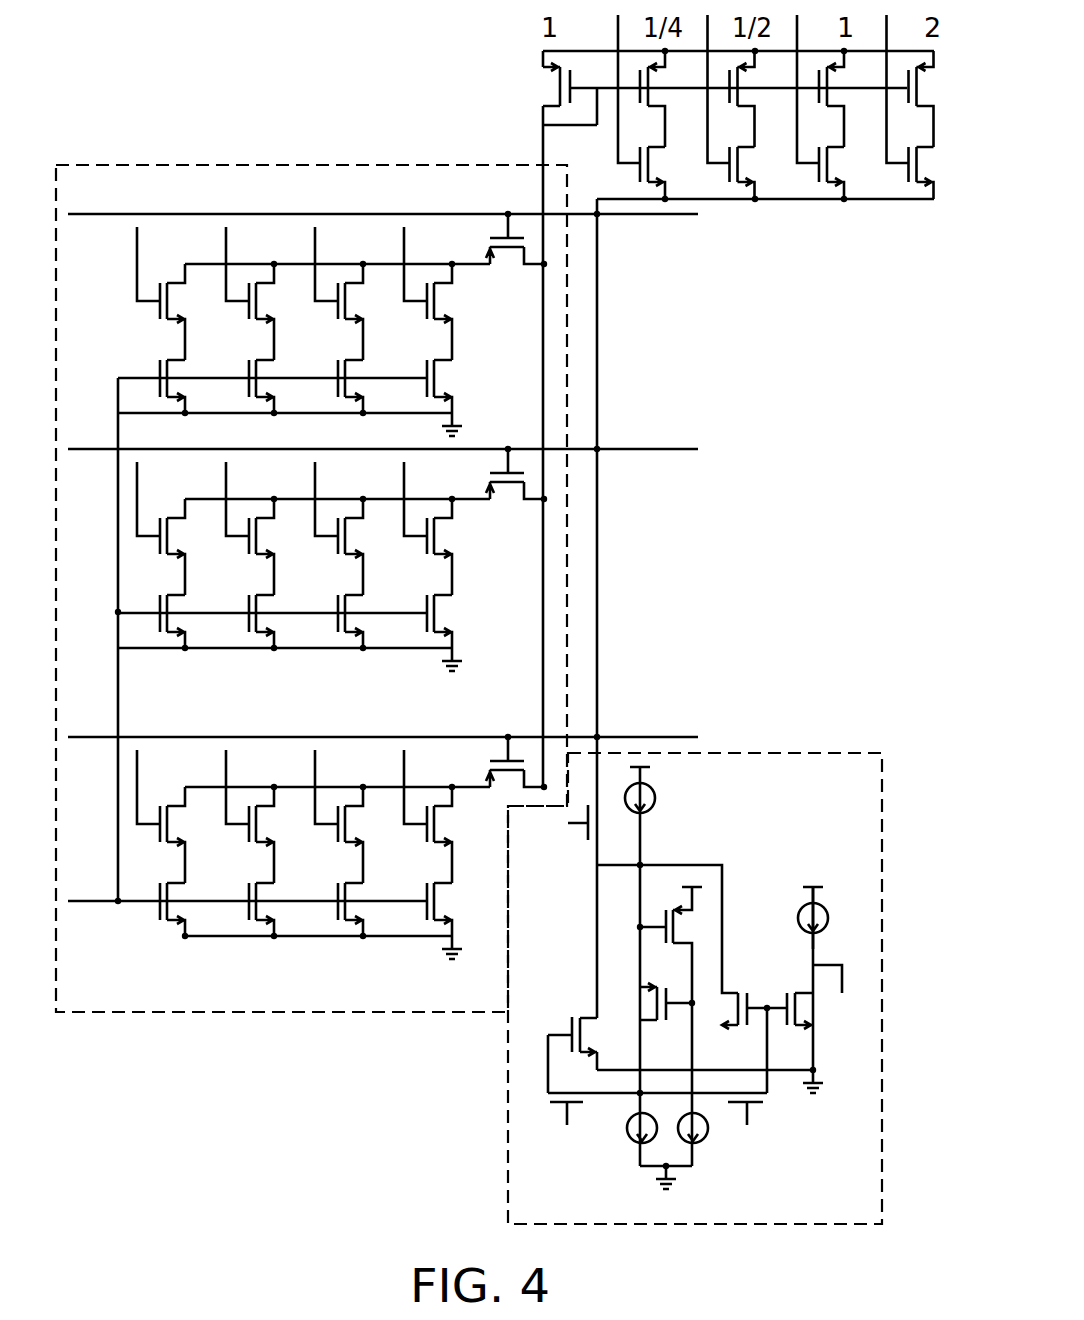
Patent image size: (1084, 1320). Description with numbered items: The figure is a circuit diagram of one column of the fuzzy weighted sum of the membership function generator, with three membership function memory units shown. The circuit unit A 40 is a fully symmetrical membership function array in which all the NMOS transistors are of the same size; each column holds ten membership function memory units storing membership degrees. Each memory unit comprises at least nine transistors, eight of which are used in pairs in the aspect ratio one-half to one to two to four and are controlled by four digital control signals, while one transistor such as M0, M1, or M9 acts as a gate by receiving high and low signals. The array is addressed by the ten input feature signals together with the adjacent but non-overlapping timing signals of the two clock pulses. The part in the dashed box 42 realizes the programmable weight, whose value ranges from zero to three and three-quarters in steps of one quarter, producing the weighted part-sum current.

The circuit unit A 40 is at (258, 164).
The output current mirror / switching circuit 42 is at (765, 752).
The gate transistor M0 is at (516, 248).
The gate transistor M1 is at (516, 483).
The gate transistor M9 is at (516, 771).